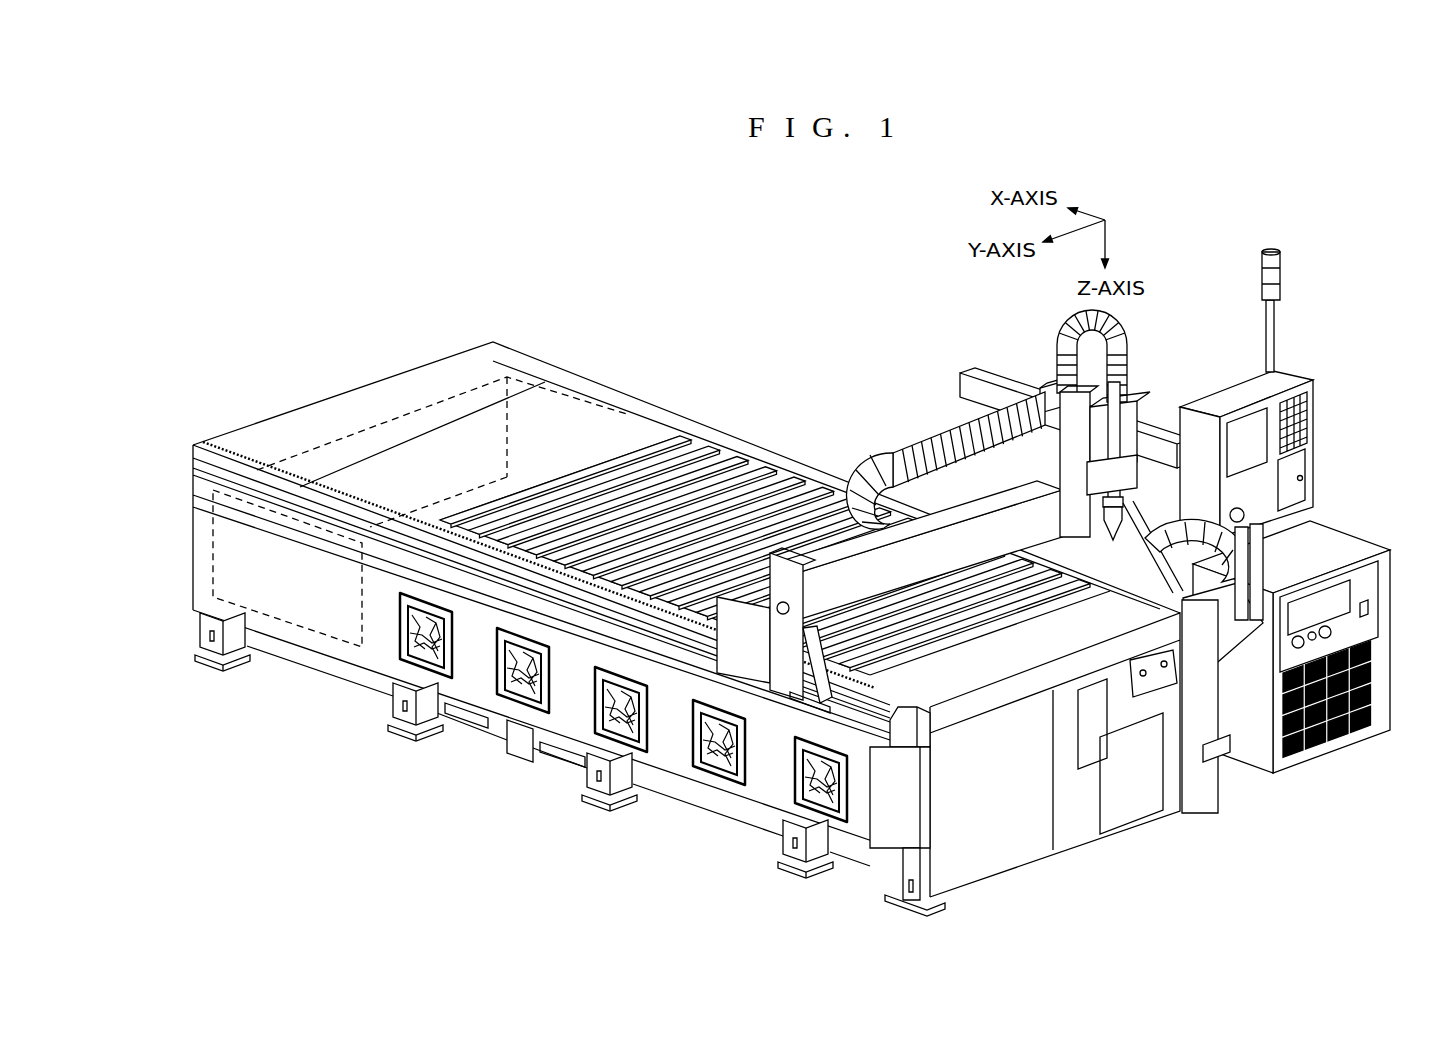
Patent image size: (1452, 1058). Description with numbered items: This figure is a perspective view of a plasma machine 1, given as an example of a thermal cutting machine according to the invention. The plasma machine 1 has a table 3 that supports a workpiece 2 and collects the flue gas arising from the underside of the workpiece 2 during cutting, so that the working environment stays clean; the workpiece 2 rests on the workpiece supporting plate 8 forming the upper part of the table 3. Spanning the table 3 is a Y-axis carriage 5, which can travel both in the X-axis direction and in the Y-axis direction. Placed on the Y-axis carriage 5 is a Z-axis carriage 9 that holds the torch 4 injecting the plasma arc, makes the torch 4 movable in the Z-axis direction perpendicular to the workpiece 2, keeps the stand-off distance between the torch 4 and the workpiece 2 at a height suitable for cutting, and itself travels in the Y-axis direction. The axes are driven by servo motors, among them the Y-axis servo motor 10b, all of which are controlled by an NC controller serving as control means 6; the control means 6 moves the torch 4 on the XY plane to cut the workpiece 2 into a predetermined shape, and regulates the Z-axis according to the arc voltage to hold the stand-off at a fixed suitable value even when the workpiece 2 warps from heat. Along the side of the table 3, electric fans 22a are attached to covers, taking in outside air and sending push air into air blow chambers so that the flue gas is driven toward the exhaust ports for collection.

The plasma machine 1 is at (772, 582).
The workpiece 2 is at (638, 418).
The table 3 is at (222, 560).
The torch 4 is at (1133, 490).
The Y-axis carriage 5 is at (837, 588).
The control means 6 is at (300, 640).
The workpiece supporting plate 8 is at (722, 458).
The Z-axis carriage 9 is at (1052, 388).
The Y-axis servo motor 10b is at (1037, 393).
The electric fan 22a is at (800, 785).